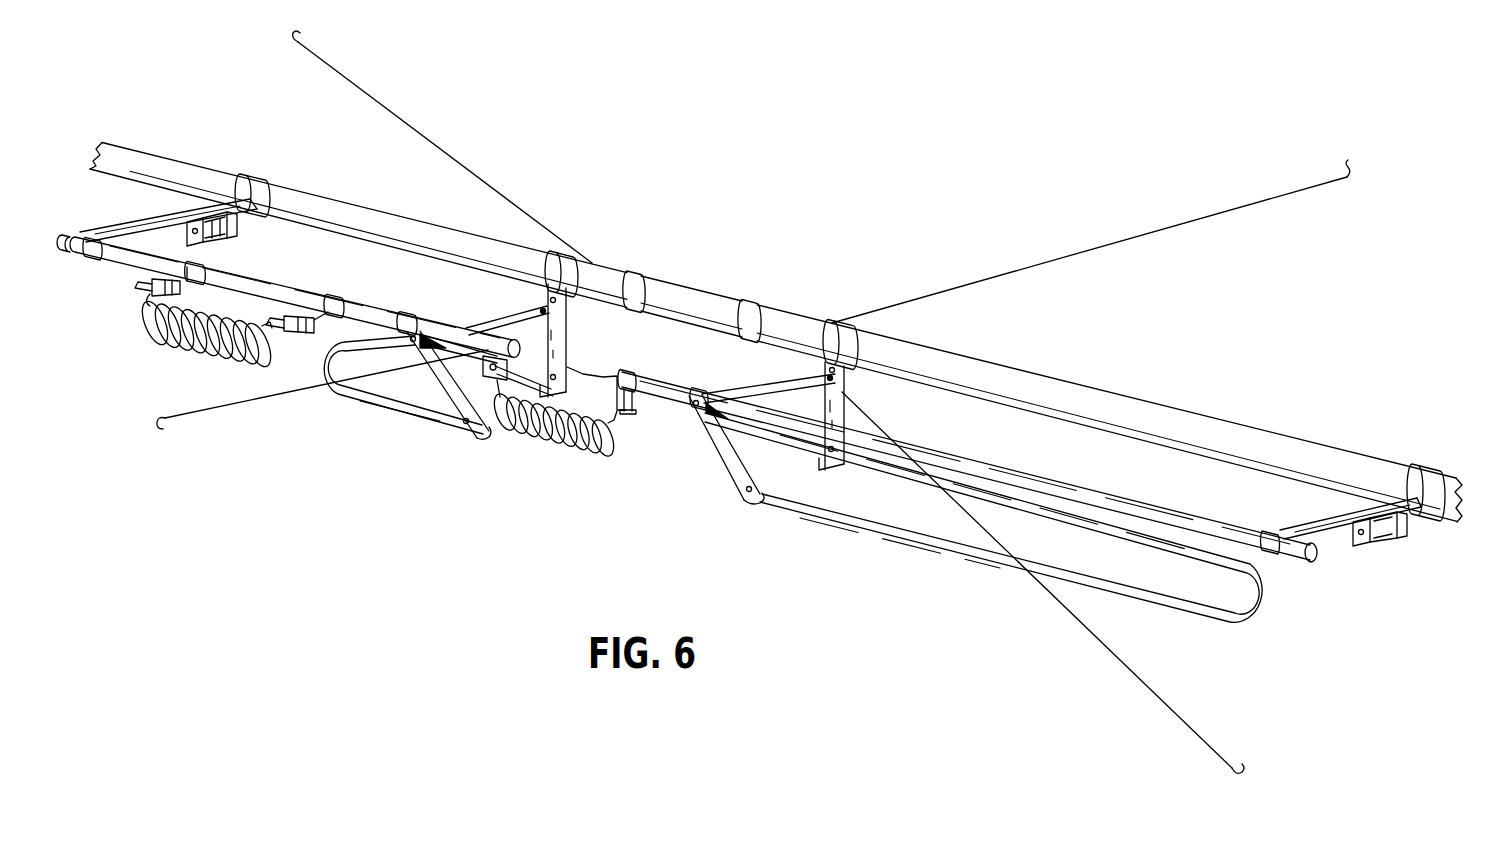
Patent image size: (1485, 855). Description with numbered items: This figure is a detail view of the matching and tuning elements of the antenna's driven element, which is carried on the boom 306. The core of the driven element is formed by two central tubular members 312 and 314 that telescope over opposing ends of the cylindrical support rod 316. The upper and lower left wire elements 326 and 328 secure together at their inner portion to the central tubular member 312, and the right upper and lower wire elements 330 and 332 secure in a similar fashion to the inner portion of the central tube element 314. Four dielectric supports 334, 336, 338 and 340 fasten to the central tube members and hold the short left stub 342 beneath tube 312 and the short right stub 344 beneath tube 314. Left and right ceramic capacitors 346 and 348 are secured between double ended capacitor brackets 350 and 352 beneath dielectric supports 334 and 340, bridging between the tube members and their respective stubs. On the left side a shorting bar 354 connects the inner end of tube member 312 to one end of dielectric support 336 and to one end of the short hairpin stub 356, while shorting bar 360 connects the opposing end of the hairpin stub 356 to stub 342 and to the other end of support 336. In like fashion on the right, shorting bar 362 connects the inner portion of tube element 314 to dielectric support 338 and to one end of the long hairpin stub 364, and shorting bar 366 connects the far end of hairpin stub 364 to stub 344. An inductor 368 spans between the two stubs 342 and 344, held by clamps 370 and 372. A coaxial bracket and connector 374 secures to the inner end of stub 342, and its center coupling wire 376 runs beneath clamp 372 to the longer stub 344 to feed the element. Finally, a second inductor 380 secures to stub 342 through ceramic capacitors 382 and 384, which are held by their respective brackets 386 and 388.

The boom 306 is at (828, 125).
The central tubular member 312 is at (344, 202).
The central tubular member 314 is at (1092, 391).
The cylindrical support rod 316 is at (690, 290).
The upper left wire element 326 is at (404, 118).
The lower left wire element 328 is at (210, 412).
The right upper wire element 330 is at (1135, 235).
The right lower wire element 332 is at (1160, 698).
The dielectric support 334 is at (128, 231).
The dielectric support 336 is at (511, 320).
The dielectric support 338 is at (797, 388).
The dielectric support 340 is at (1310, 522).
The short left stub 342 is at (256, 286).
The short right stub 344 is at (967, 461).
The left ceramic capacitor 346 is at (230, 235).
The right ceramic capacitor 348 is at (1388, 539).
The double ended capacitor bracket 350 is at (160, 234).
The double ended capacitor bracket 352 is at (1321, 540).
The shorting bar 354 is at (562, 328).
The short hairpin stub 356 is at (393, 411).
The shorting bar 360 is at (448, 388).
The shorting bar 362 is at (842, 411).
The long hairpin stub 364 is at (935, 541).
The shorting bar 366 is at (727, 462).
The inductor 368 is at (573, 445).
The clamp 370 is at (442, 369).
The clamp 372 is at (634, 401).
The coaxial bracket and connector 374 is at (510, 356).
The center coupling wire 376 is at (588, 373).
The inductor 380 is at (197, 346).
The ceramic capacitor 382 is at (150, 282).
The ceramic capacitor 384 is at (313, 333).
The bracket 386 is at (204, 266).
The bracket 388 is at (338, 303).